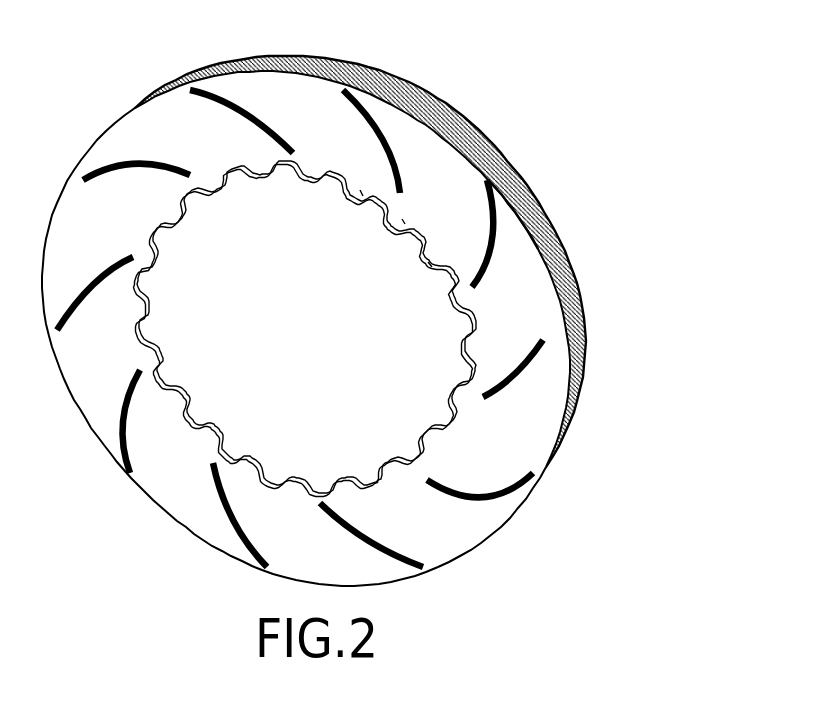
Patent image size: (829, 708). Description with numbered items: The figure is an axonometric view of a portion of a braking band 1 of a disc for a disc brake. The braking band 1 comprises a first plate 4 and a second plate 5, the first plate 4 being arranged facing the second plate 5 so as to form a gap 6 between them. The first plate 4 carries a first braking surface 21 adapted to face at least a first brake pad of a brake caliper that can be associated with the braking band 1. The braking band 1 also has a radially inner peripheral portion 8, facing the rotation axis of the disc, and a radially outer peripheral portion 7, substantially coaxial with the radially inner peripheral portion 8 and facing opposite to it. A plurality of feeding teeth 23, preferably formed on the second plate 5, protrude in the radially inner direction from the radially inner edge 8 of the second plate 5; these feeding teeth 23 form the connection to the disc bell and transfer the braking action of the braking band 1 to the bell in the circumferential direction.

The braking band 1 is at (391, 293).
The first plate 4 is at (476, 197).
The second plate 5 is at (528, 168).
The gap 6 is at (546, 203).
The radially outer peripheral portion 7 is at (406, 140).
The radially inner peripheral portion 8 is at (325, 133).
The first braking surface 21 is at (514, 301).
The feeding teeth 23 is at (432, 263).